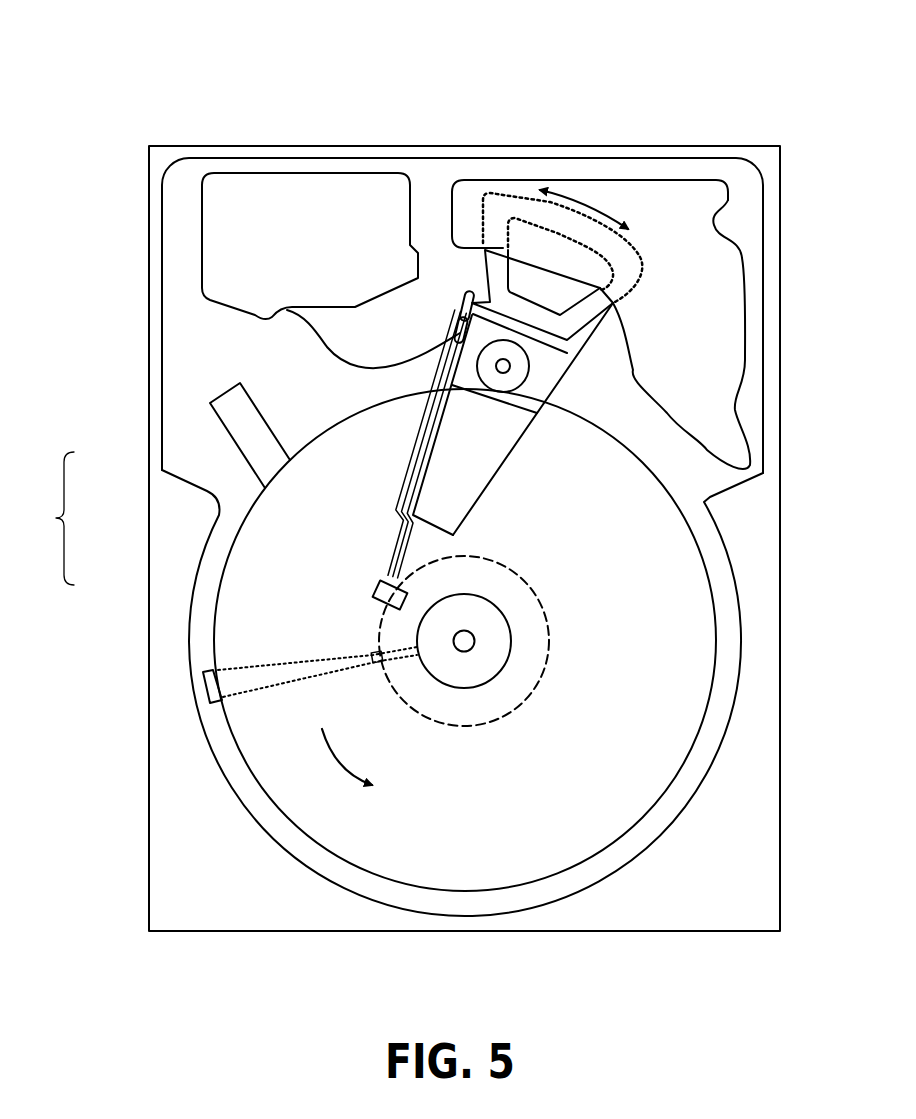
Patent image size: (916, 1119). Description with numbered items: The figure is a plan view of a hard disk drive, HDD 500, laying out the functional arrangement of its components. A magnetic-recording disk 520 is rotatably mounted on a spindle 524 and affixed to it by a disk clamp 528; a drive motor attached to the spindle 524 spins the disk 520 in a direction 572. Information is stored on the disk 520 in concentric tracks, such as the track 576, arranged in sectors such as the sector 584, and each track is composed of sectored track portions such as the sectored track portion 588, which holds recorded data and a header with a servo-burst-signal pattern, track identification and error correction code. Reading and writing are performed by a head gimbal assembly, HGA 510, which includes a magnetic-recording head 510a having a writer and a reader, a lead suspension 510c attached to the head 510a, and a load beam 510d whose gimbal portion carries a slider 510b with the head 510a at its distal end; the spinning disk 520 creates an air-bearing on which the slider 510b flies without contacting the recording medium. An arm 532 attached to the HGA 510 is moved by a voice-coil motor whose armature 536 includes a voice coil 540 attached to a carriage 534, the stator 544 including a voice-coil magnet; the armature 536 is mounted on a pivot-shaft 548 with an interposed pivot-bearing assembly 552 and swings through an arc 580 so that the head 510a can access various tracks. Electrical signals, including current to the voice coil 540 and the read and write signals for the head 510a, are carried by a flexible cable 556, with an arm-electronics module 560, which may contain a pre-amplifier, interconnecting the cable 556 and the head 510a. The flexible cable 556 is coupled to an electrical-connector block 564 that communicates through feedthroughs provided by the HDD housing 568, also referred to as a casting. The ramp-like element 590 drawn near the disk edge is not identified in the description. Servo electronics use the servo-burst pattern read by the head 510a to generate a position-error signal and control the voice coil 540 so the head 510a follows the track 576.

The HDD 500 is at (117, 78).
The head gimbal assembly 510 is at (239, 460).
The magnetic-recording head 510a is at (378, 590).
The slider 510b is at (385, 578).
The lead suspension 510c is at (405, 533).
The load beam 510d is at (393, 517).
The magnetic-recording disk 520 is at (645, 592).
The spindle 524 is at (466, 641).
The disk clamp 528 is at (488, 657).
The arm 532 is at (457, 478).
The carriage 534 is at (520, 398).
The armature 536 is at (478, 268).
The voice coil 540 is at (499, 262).
The stator 544 is at (711, 270).
The pivot-shaft 548 is at (510, 366).
The pivot-bearing assembly 552 is at (517, 378).
The flexible cable 556 is at (323, 340).
The arm-electronics module 560 is at (453, 338).
The electrical-connector block 564 is at (227, 243).
The HDD housing 568 is at (764, 160).
The direction 572 is at (355, 765).
The track 576 is at (537, 602).
The arc 580 is at (586, 192).
The sector 584 is at (204, 684).
The sectored track portion 588 is at (367, 658).
The ramp 590 is at (211, 402).